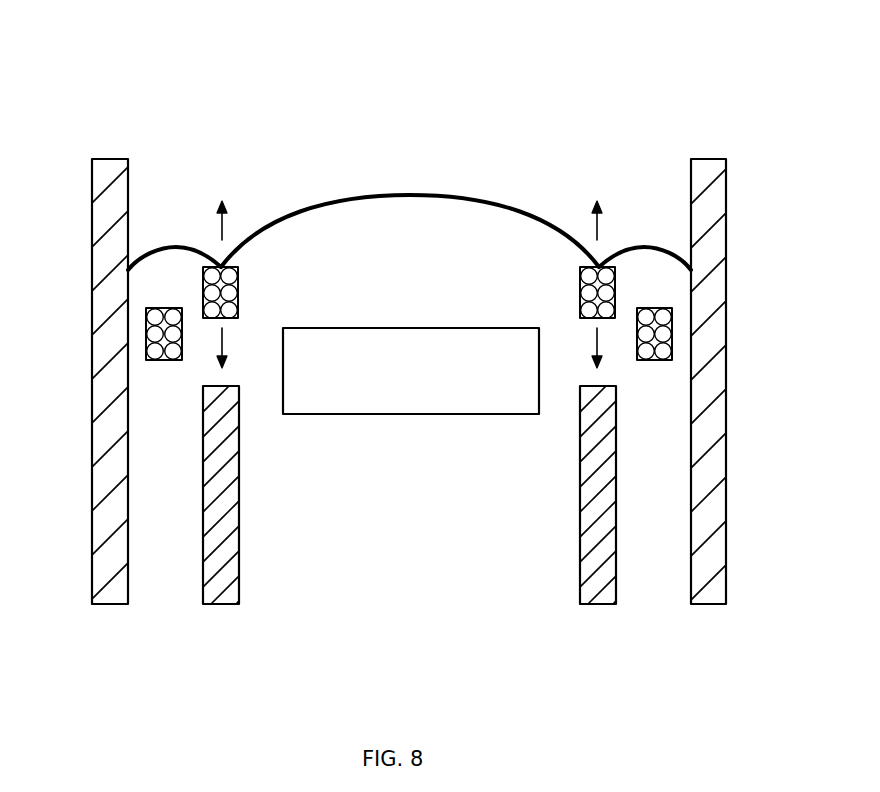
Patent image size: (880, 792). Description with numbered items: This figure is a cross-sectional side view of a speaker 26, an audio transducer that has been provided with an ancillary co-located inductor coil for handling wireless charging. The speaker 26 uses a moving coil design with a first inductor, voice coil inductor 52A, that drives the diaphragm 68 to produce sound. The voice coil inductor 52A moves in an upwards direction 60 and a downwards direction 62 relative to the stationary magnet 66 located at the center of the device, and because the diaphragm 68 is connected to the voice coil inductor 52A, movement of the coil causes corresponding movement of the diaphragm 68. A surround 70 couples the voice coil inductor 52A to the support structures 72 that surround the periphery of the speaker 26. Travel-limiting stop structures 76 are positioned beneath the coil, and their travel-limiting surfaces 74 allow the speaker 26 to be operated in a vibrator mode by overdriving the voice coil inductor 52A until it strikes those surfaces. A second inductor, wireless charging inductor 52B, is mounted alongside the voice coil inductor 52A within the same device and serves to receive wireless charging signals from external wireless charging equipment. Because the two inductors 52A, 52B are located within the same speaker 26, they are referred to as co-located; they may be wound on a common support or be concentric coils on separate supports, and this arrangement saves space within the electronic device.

The speaker 26 is at (694, 56).
The voice coil inductor 52A is at (239, 283).
The wireless charging inductor 52B is at (165, 360).
The upwards direction 60 is at (223, 224).
The downwards direction 62 is at (223, 345).
The magnet 66 is at (440, 414).
The diaphragm 68 is at (412, 195).
The surround 70 is at (177, 247).
The support structures 72 is at (92, 396).
The travel-limiting surfaces 74 is at (218, 386).
The travel-limiting stop structures 76 is at (222, 604).